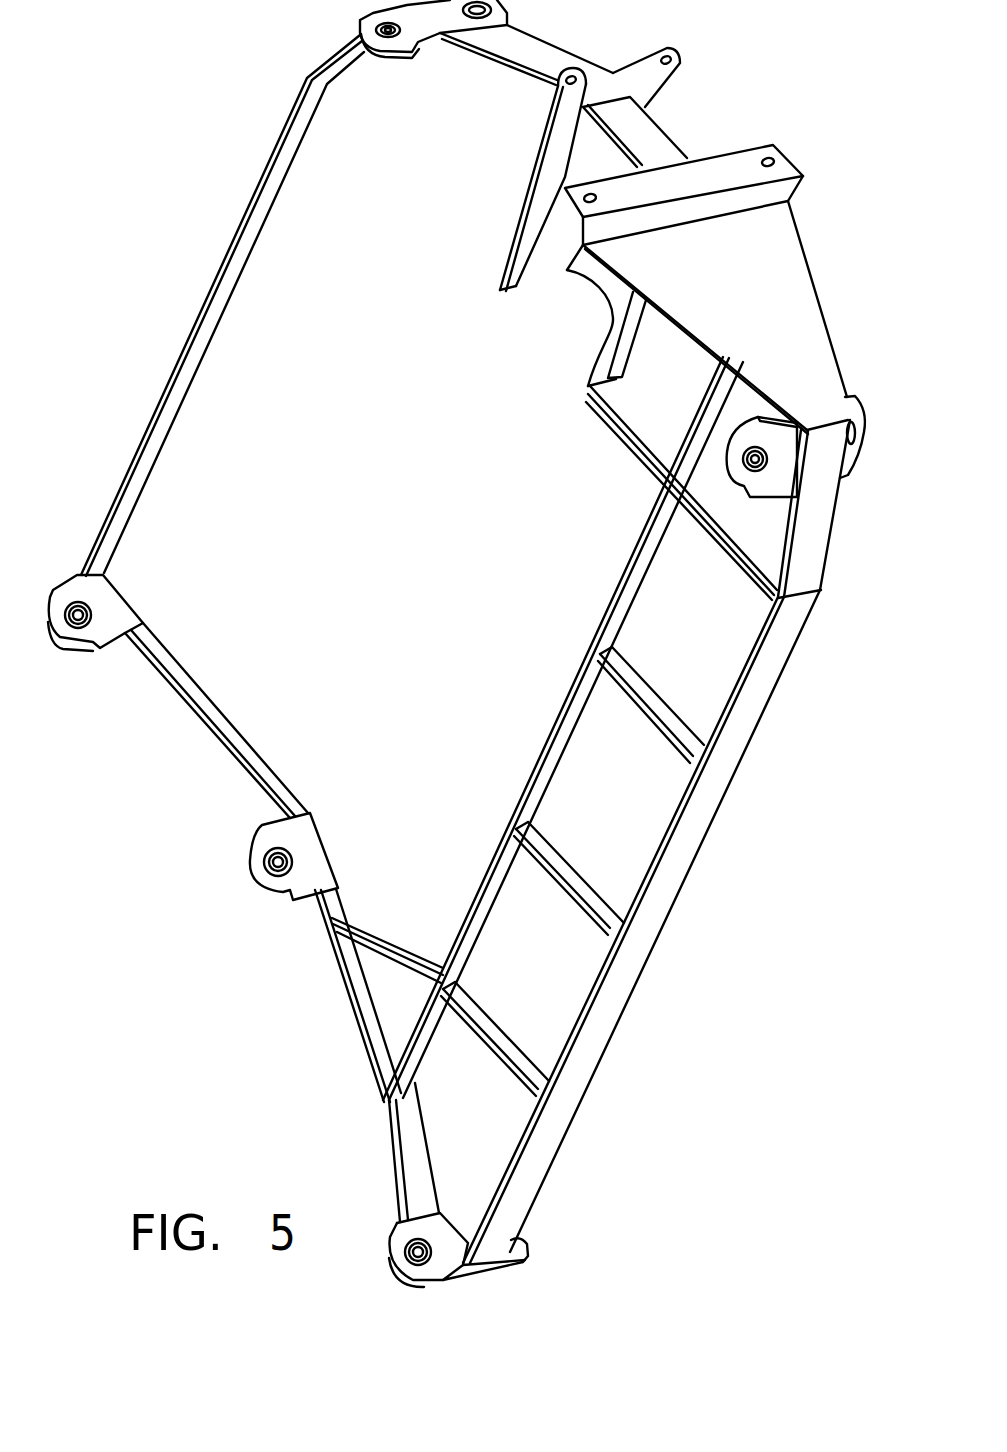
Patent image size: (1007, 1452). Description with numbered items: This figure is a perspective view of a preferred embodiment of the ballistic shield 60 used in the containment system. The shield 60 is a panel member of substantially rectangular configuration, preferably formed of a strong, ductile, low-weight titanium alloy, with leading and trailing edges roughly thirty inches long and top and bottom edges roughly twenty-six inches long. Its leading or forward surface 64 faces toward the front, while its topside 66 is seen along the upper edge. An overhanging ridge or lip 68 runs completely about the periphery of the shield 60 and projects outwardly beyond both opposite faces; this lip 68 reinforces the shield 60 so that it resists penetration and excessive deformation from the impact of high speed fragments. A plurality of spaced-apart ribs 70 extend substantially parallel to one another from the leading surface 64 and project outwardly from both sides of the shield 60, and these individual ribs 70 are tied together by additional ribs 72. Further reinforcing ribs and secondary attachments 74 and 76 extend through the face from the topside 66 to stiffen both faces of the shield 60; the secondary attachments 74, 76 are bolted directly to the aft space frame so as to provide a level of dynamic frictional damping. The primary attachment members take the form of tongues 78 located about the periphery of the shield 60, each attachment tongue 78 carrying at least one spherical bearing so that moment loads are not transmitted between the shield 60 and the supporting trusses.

The ballistic shield 60 is at (192, 70).
The leading surface 64 is at (690, 830).
The topside 66 is at (650, 138).
The overhanging ridge or lip 68 is at (207, 298).
The ribs 70 is at (657, 717).
The additional ribs 72 is at (612, 602).
The secondary attachment 74 is at (531, 193).
The secondary attachment 76 is at (597, 353).
The attachment tongue 78 is at (250, 873).